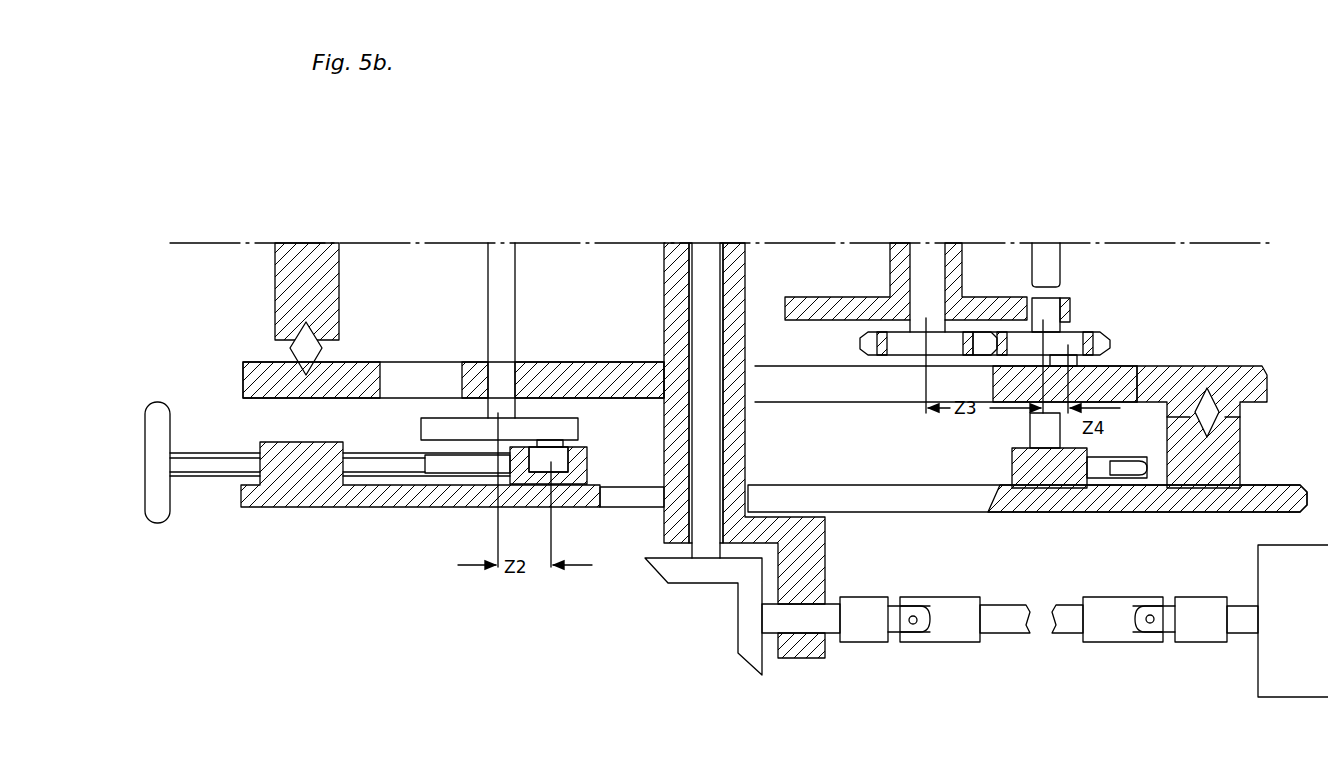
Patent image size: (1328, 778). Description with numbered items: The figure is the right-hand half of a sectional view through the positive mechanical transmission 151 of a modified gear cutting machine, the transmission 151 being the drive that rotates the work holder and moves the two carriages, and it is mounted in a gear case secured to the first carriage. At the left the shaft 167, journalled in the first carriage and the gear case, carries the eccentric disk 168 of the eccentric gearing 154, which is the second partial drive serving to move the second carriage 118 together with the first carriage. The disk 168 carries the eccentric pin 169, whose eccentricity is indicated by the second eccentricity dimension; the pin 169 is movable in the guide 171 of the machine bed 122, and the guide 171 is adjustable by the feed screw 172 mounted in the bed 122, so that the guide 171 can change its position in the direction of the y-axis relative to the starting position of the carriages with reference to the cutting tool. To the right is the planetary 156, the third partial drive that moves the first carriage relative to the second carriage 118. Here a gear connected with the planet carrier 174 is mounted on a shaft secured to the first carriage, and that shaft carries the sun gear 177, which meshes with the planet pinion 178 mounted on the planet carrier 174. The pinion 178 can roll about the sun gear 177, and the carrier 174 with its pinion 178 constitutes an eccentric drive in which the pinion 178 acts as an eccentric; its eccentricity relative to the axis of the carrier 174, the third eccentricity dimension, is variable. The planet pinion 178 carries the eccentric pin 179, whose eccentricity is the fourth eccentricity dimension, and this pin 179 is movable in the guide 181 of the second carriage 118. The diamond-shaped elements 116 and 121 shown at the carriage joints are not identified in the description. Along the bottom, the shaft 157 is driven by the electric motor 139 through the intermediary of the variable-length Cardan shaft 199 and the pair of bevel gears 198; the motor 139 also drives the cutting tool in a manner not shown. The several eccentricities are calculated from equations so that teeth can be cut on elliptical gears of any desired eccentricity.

The cutter/diamond element 116 is at (296, 349).
The second carriage 118 is at (1206, 380).
The cutter/diamond element 121 is at (1216, 420).
The machine bed 122 is at (482, 497).
The electric motor 139 is at (1264, 680).
The positive mechanical transmission 151 is at (624, 548).
The eccentric gearing 154 is at (414, 430).
The planetary 156 is at (1148, 290).
The shaft 157 is at (738, 490).
The shaft 167 is at (517, 306).
The eccentric disk 168 is at (562, 432).
The eccentric pin 169 is at (567, 473).
The guide 171 is at (578, 478).
The feed screw 172 is at (372, 470).
The planet carrier 174 is at (976, 302).
The sun gear 177 is at (906, 354).
The planet pinion 178 is at (1068, 340).
The eccentric pin 179 is at (1078, 380).
The guide 181 is at (1020, 382).
The pair of bevel gears 198 is at (693, 622).
The variable-length Cardan shaft 199 is at (1012, 634).